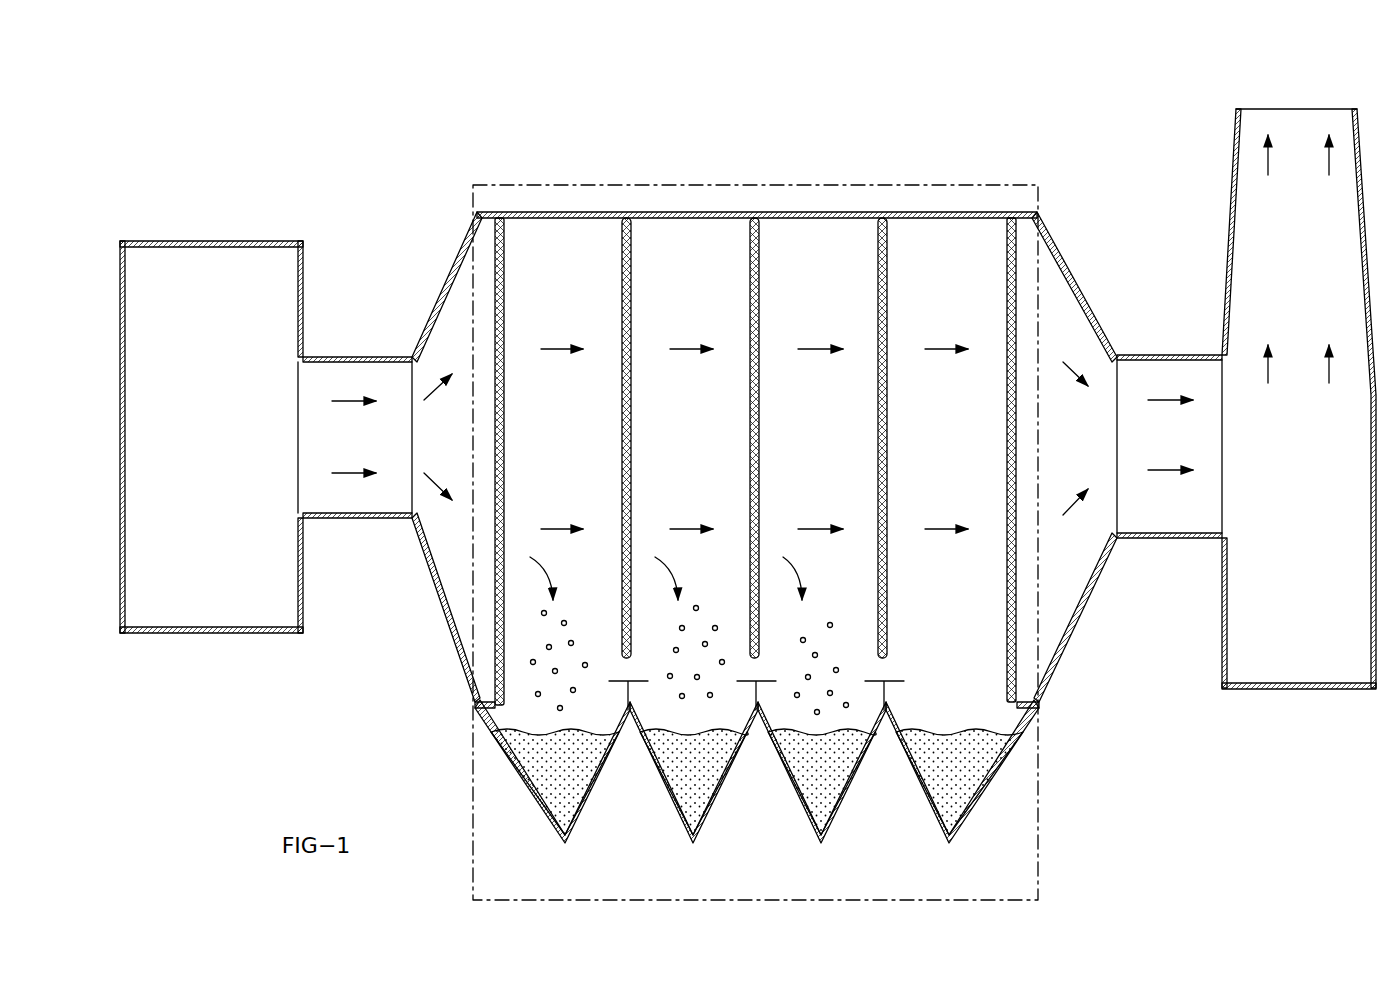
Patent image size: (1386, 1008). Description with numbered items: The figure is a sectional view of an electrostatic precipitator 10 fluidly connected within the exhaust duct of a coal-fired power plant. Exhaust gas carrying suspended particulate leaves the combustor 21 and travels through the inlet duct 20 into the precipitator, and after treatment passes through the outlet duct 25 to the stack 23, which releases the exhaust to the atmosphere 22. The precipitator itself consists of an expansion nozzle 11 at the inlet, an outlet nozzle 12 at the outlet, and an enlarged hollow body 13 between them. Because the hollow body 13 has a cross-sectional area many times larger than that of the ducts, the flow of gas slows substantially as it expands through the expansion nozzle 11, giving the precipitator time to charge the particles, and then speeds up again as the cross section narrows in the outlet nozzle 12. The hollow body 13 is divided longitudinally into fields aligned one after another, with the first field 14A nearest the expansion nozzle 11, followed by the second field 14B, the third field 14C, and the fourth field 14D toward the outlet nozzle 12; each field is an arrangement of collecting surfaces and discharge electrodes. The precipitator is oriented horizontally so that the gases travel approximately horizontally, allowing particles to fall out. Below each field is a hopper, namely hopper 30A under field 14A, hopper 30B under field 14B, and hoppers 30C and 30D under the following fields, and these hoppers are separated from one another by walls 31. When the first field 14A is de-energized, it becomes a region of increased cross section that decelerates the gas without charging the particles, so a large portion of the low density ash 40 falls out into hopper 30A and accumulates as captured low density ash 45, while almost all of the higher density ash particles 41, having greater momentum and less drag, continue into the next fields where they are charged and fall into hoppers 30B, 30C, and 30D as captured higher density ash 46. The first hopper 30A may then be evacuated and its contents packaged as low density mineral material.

The electrostatic precipitator 10 is at (1067, 688).
The expansion nozzle 11 is at (440, 287).
The outlet nozzle 12 is at (1076, 283).
The hollow body 13 is at (492, 181).
The first field 14A is at (558, 266).
The second field 14B is at (688, 266).
The third field 14C is at (812, 266).
The fourth field 14D is at (950, 265).
The inlet duct 20 is at (369, 352).
The combustor 21 is at (192, 241).
The atmosphere 22 is at (1283, 93).
The stack 23 is at (1317, 690).
The outlet duct 25 is at (1161, 352).
The first hopper 30A is at (588, 808).
The second hopper 30B is at (716, 808).
The third hopper 30C is at (846, 808).
The fourth hopper 30D is at (972, 808).
The walls 31 is at (628, 690).
The low density ash 40 is at (533, 662).
The higher density ash particles 41 is at (716, 627).
The captured low density ash 45 is at (560, 767).
The captured higher density ash 46 is at (690, 773).